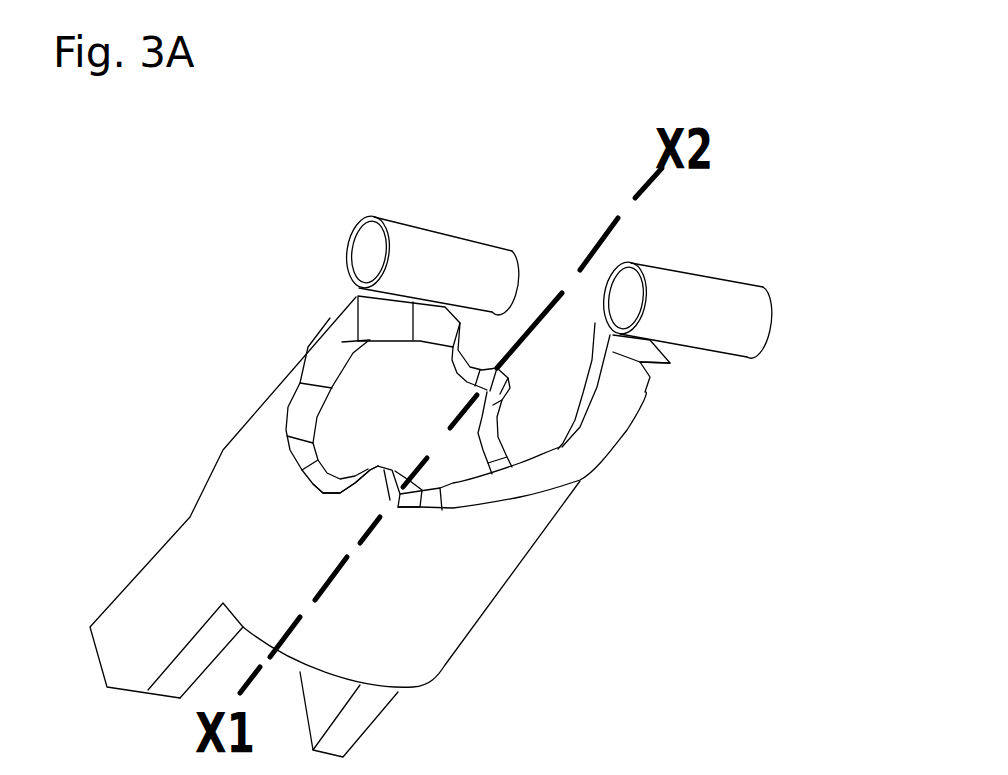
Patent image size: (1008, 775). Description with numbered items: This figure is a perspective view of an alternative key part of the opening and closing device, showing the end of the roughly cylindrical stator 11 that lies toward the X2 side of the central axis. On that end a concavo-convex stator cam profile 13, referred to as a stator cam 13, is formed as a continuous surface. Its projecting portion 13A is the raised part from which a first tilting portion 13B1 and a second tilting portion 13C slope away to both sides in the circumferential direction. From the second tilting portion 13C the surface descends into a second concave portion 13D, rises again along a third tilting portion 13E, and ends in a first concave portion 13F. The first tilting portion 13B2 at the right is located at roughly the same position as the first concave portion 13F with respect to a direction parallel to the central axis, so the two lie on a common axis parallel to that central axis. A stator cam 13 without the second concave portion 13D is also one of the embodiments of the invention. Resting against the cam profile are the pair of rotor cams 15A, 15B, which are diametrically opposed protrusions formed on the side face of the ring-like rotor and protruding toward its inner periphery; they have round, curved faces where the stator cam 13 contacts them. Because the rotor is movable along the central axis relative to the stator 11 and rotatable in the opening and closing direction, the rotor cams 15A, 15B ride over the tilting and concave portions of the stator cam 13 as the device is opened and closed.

The stator 11 is at (222, 213).
The stator cam profile 13 is at (387, 323).
The projecting portion 13A is at (660, 363).
The first tilting portion 13B1 is at (653, 345).
The first tilting portion 13B2 is at (427, 307).
The second tilting portion 13C is at (563, 468).
The second concave portion 13D is at (398, 508).
The third tilting portion 13E is at (325, 482).
The first concave portion 13F is at (308, 457).
The rotor cam 15A is at (735, 317).
The rotor cam 15B is at (433, 258).